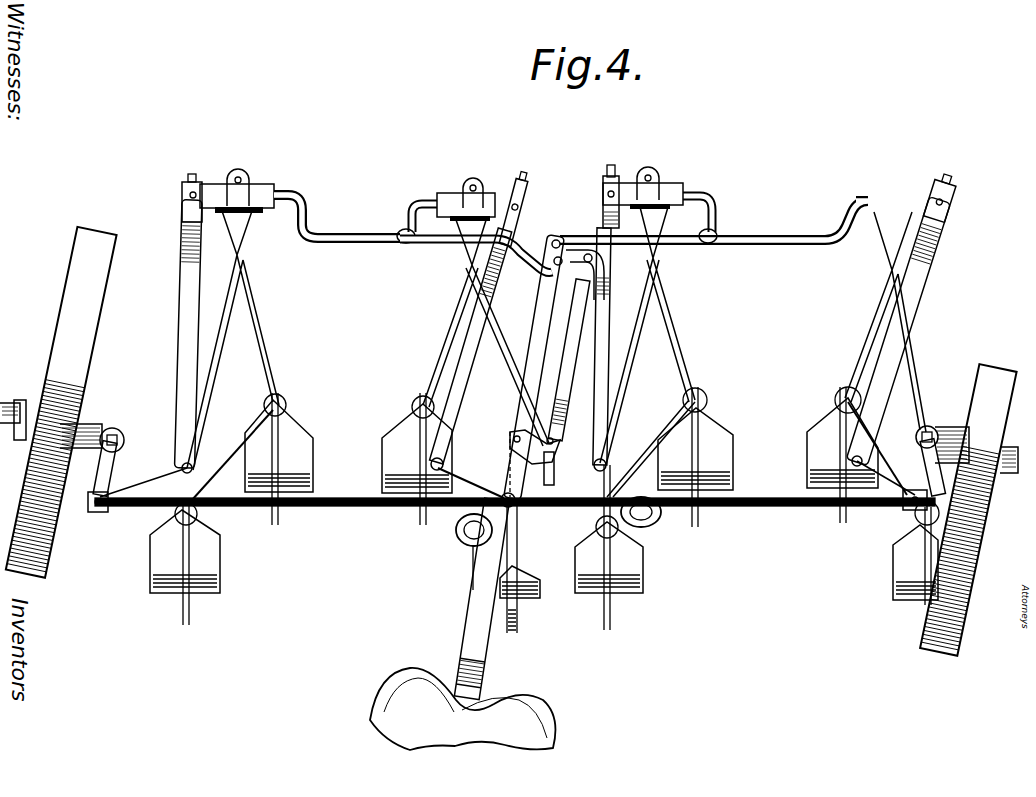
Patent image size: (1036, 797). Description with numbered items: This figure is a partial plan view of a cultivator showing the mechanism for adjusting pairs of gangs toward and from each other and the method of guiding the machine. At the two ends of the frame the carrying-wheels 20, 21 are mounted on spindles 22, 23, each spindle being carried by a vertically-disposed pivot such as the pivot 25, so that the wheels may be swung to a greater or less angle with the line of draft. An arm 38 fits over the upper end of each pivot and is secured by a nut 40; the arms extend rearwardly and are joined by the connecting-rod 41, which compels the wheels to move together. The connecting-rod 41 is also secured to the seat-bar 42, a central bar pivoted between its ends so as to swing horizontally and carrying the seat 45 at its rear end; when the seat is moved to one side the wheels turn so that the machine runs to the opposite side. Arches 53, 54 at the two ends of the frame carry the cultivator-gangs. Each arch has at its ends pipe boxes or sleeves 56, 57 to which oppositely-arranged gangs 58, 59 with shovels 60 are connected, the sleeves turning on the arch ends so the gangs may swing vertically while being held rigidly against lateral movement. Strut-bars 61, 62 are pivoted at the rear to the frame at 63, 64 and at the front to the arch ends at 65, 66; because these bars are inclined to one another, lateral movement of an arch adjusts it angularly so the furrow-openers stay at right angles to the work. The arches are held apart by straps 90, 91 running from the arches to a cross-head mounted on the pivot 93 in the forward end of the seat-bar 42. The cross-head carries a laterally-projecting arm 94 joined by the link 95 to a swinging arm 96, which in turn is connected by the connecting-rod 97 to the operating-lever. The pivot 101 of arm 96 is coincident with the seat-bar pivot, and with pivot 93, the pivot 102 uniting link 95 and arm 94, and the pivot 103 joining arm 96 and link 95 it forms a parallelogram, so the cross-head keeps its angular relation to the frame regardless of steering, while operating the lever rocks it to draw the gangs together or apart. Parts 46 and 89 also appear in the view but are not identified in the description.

The carrying-wheel 20 is at (80, 382).
The carrying-wheel 21 is at (988, 380).
The spindle 22 is at (13, 407).
The spindle 23 is at (1012, 476).
The vertically-disposed pivot 25 is at (112, 428).
The arm 38 is at (114, 468).
The nut 40 is at (115, 430).
The connecting-rod 41 is at (355, 508).
The seat-bar 42 is at (468, 622).
The seat 45 is at (520, 722).
The collar 46 is at (458, 674).
The arch 53 is at (378, 244).
The arch 54 is at (805, 245).
The pipe box or sleeve 56 is at (262, 190).
The pipe box or sleeve 57 is at (455, 198).
The gang 58 is at (272, 368).
The gang 59 is at (448, 330).
The shovel 60 is at (300, 445).
The strut-bar 61 is at (190, 282).
The strut-bar 62 is at (468, 370).
The pivotal connection 63 is at (190, 462).
The pivotal connection 64 is at (437, 472).
The connection 65 is at (190, 196).
The connection 66 is at (603, 194).
The ring 89 is at (465, 540).
The strap 90 is at (450, 246).
The strap 91 is at (647, 245).
The pivot 93 is at (556, 265).
The laterally-projecting arm 94 is at (585, 268).
The link 95 is at (576, 360).
The swinging arm 96 is at (497, 500).
The connecting-rod 97 is at (600, 470).
The pivot 101 is at (512, 440).
The pivot 102 is at (490, 464).
The pivot 103 is at (573, 441).